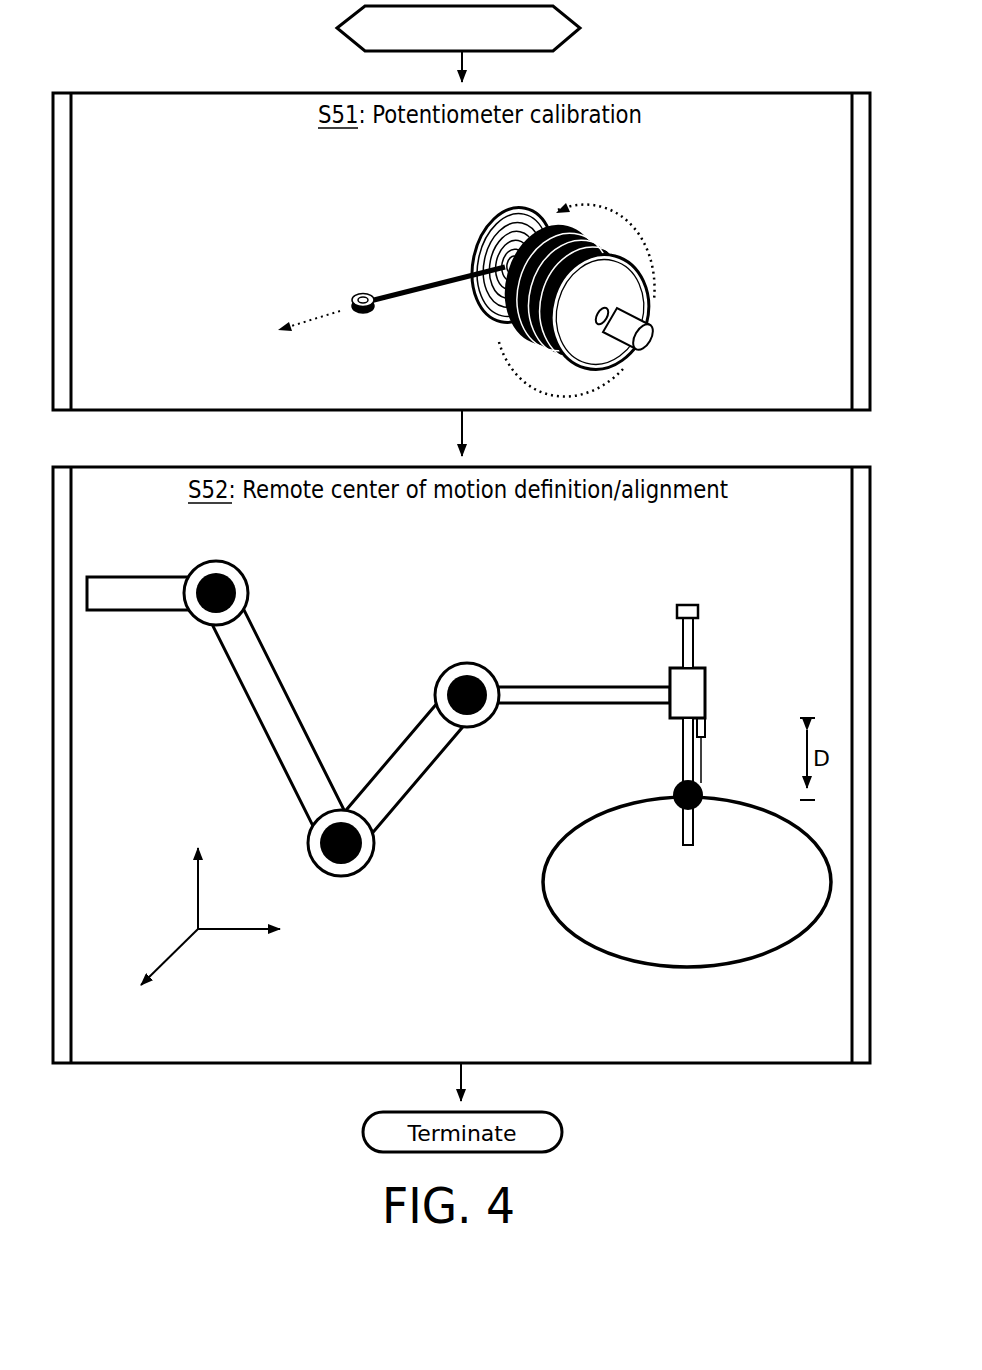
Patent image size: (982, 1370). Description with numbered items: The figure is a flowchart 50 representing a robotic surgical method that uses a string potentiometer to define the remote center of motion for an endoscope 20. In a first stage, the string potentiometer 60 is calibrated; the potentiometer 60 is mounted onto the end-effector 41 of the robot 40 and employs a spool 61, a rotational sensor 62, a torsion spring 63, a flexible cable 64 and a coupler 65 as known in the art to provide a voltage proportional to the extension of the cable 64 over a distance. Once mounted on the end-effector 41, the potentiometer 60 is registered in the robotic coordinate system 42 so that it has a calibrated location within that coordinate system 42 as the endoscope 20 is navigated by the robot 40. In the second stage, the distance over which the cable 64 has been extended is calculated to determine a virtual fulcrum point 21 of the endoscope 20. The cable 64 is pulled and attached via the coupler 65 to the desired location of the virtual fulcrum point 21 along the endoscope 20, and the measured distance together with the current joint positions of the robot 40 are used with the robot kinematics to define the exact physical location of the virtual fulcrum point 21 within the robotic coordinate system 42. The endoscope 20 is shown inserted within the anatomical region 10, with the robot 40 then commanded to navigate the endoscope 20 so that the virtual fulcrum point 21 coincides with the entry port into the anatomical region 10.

The flowchart 50 is at (547, 41).
The anatomical region 10 is at (679, 933).
The endoscope 20 is at (697, 652).
The virtual fulcrum point 21 is at (674, 793).
The robot 40 is at (225, 690).
The end-effector 41 is at (678, 676).
The robotic coordinate system 42 is at (170, 915).
The string potentiometer 60 is at (534, 479).
The spool 61 is at (627, 280).
The rotational sensor 62 is at (647, 340).
The torsion spring 63 is at (500, 220).
The flexible cable 64 is at (438, 275).
The coupler 65 is at (352, 300).